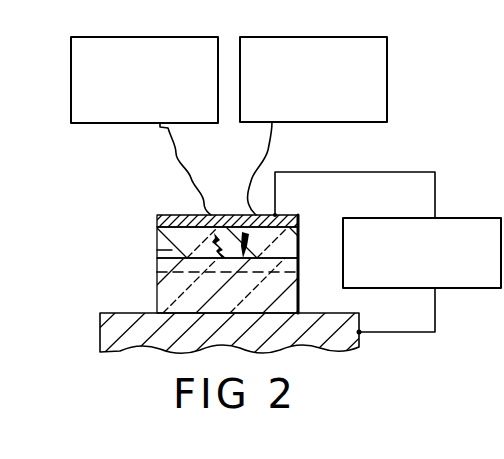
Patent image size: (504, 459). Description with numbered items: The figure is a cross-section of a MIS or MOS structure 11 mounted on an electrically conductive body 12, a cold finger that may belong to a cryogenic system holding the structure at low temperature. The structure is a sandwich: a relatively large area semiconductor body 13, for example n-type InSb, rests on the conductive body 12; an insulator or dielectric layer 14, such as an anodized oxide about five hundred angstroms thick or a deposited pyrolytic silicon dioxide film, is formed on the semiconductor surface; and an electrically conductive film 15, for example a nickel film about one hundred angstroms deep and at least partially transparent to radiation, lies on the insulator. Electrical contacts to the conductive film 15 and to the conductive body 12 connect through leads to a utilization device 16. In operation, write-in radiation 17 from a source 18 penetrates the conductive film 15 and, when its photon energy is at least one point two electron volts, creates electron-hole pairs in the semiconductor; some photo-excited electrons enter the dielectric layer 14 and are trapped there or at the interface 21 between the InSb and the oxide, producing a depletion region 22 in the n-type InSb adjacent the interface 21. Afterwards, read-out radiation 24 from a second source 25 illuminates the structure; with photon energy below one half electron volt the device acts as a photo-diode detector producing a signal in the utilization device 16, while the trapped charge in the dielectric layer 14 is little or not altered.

The MIS or MOS structure 11 is at (93, 217).
The electrically conductive body 12 is at (99, 337).
The semiconductor body 13 is at (302, 258).
The insulator or dielectric layer 14 is at (302, 227).
The electrically conductive film 15 is at (291, 214).
The utilization device 16 is at (439, 218).
The write-in radiation 17 is at (168, 146).
The source of write-in radiation 18 is at (71, 122).
The interface 21 is at (158, 250).
The depletion region 22 is at (158, 262).
The read-out radiation 24 is at (269, 155).
The source of read-out radiation 25 is at (388, 119).